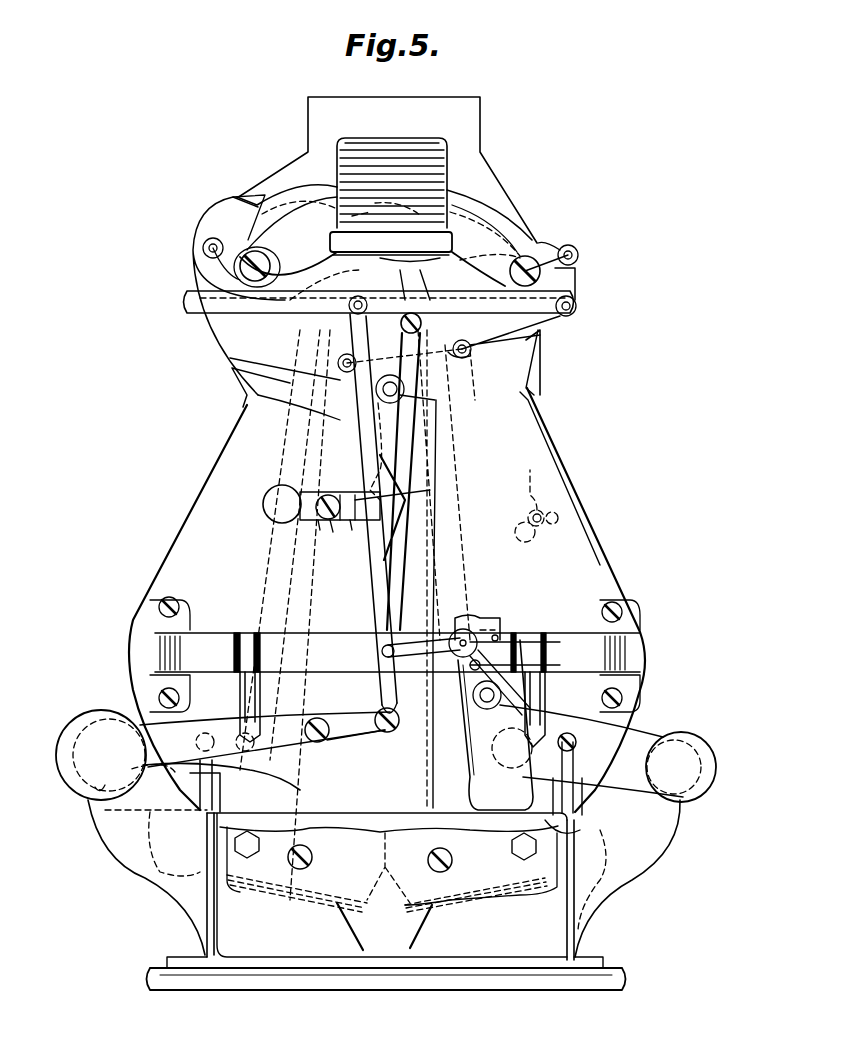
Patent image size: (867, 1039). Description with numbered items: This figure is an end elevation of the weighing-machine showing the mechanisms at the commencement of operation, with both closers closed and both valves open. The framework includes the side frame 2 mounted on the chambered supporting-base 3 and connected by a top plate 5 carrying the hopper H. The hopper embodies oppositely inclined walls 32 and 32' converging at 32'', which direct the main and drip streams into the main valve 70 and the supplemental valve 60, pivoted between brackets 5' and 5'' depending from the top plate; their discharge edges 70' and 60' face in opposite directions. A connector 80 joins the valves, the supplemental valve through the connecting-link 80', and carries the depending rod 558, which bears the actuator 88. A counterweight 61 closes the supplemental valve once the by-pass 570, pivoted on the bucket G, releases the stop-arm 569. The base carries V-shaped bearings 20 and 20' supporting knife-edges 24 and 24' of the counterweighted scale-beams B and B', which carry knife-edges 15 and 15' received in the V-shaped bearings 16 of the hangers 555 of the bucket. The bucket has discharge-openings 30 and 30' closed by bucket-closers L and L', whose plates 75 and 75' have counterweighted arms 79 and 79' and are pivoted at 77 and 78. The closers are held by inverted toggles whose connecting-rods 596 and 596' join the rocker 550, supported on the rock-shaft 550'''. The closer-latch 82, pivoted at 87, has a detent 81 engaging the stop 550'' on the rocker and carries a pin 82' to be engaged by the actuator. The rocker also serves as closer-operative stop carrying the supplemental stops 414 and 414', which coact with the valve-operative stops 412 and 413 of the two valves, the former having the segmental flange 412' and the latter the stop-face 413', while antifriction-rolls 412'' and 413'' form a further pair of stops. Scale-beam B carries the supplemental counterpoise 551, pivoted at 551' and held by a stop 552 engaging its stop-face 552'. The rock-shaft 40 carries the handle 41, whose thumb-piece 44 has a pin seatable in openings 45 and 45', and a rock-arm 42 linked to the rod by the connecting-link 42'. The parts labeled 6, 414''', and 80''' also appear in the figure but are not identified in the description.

The hopper H is at (470, 133).
The top plate 5 is at (384, 212).
The arm or bracket 5' is at (298, 193).
The arm or bracket 5'' is at (494, 219).
The segmental flange 412' is at (391, 243).
The convergence point of hopper walls 32'' is at (382, 213).
The hopper wall 32' is at (487, 248).
The hopper wall 32 is at (328, 280).
The second supplemental stop 414' is at (414, 279).
The main valve 70 is at (234, 296).
The valve-operative stop 412 is at (362, 297).
The supplemental stop flange 414 is at (262, 362).
The arm end 414''' is at (261, 387).
The discharge edge of main valve 70' is at (299, 398).
The connector 80 is at (379, 314).
The connecting-link 80' is at (582, 284).
The counterweight 61 is at (560, 248).
The supplemental valve 60 is at (516, 337).
The discharge edge of supplemental valve 60' is at (490, 350).
The valve-operative stop 413 is at (559, 362).
The supplemental stop-face 413' is at (422, 386).
The antifriction-roll 413'' is at (495, 375).
The antifriction-roll 412'' is at (400, 364).
The rocker 550 is at (340, 513).
The stop on rocker 550'' is at (420, 489).
The rock-shaft 550''' is at (442, 406).
The depending rod 558 is at (370, 435).
The detent 81 is at (408, 570).
The connecting-rod 596 is at (297, 615).
The connecting-rod 596' is at (453, 569).
The stop-arm 569 is at (550, 415).
The by-pass 570 is at (545, 500).
The bucket G is at (387, 600).
The hanger 555 is at (228, 633).
The handle 41 is at (530, 656).
The supplemental counterpoise 551 is at (275, 694).
The V-shaped bearing 16 is at (258, 718).
The opening 45 is at (510, 628).
The thumb-piece 44 is at (478, 630).
The opening 45' is at (468, 621).
The connecting-link 42' is at (421, 634).
The rock-arm 42 is at (483, 682).
The pivot 6 is at (463, 677).
The side frame 2 is at (480, 748).
The rock-shaft 40 is at (487, 700).
The closer-latch 82 is at (278, 514).
The latch pivot 87 is at (332, 490).
The actuator 88 is at (322, 528).
The stop pin 82' is at (348, 537).
The stop-face 552' is at (101, 755).
The stop 552 is at (76, 811).
The V-shaped bearing 20 is at (269, 749).
The knife-edge 24 is at (223, 717).
The knife-edge 15 is at (266, 760).
The counterpoise pivot 551' is at (356, 745).
The scale-beam B is at (147, 859).
The V-shaped bearing 20' is at (591, 751).
The knife-edge 24' is at (583, 764).
The knife-edge 15' is at (523, 750).
The scale-beam B' is at (645, 844).
The counterweighted arm 79 is at (191, 801).
The counterweighted arm 79' is at (581, 829).
The chambered supporting-base 3 is at (205, 930).
The bucket-closer L is at (387, 885).
The bucket-closer L' is at (481, 873).
The closer pivot 77 is at (251, 854).
The closer pivot 78 is at (520, 856).
The discharge-opening 30 is at (297, 897).
The discharge-opening 30' is at (476, 899).
The rod 80''' is at (388, 868).
The closer plate 75 is at (337, 926).
The closer plate 75' is at (442, 926).